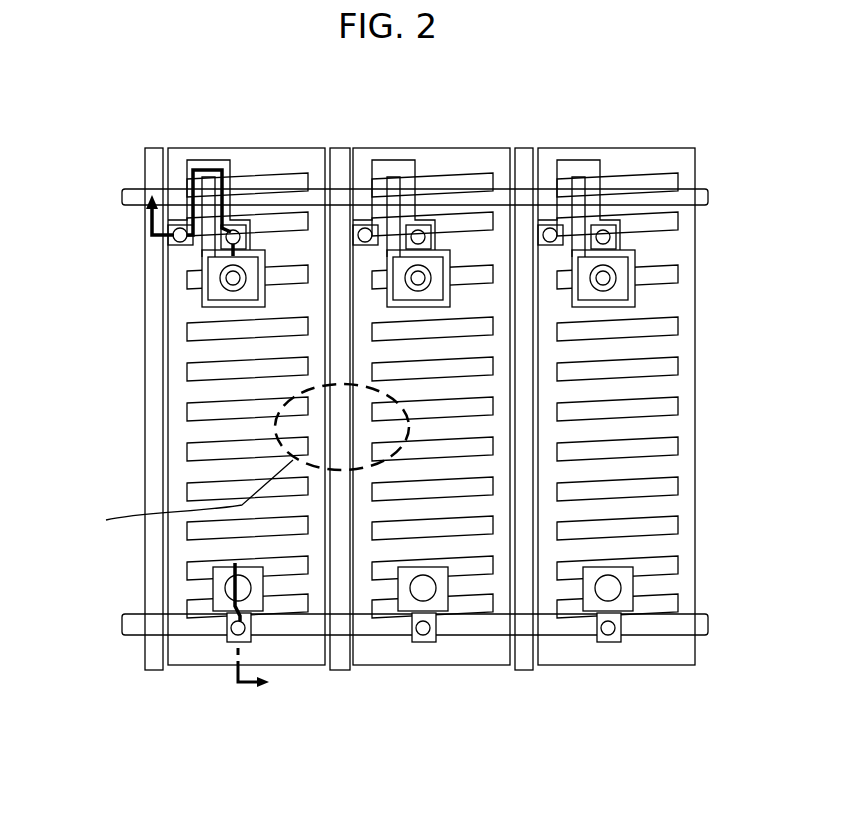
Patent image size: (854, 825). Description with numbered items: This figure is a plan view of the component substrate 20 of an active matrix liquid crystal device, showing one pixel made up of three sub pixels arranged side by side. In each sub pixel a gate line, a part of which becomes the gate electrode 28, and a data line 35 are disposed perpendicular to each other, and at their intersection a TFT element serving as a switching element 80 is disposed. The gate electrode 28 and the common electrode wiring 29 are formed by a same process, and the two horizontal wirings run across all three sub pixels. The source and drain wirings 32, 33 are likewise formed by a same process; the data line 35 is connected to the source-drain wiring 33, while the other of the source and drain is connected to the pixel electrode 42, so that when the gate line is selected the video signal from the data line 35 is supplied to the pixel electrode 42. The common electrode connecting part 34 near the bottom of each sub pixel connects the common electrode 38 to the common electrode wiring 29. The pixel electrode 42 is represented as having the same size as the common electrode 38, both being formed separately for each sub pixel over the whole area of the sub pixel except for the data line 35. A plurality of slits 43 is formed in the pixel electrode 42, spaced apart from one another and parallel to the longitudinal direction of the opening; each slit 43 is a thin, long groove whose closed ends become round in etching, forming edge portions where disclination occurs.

The component substrate 20 is at (664, 103).
The gate electrode 28 is at (122, 196).
The common electrode wiring 29 is at (122, 627).
The source-drain wiring 32 is at (218, 296).
The source-drain wiring 33 is at (177, 246).
The common electrode connecting part 34 is at (213, 592).
The data line 35 is at (151, 148).
The common electrode 38 is at (292, 667).
The pixel electrode 42 is at (300, 148).
The slit 43 is at (185, 415).
The switching element 80 is at (243, 166).